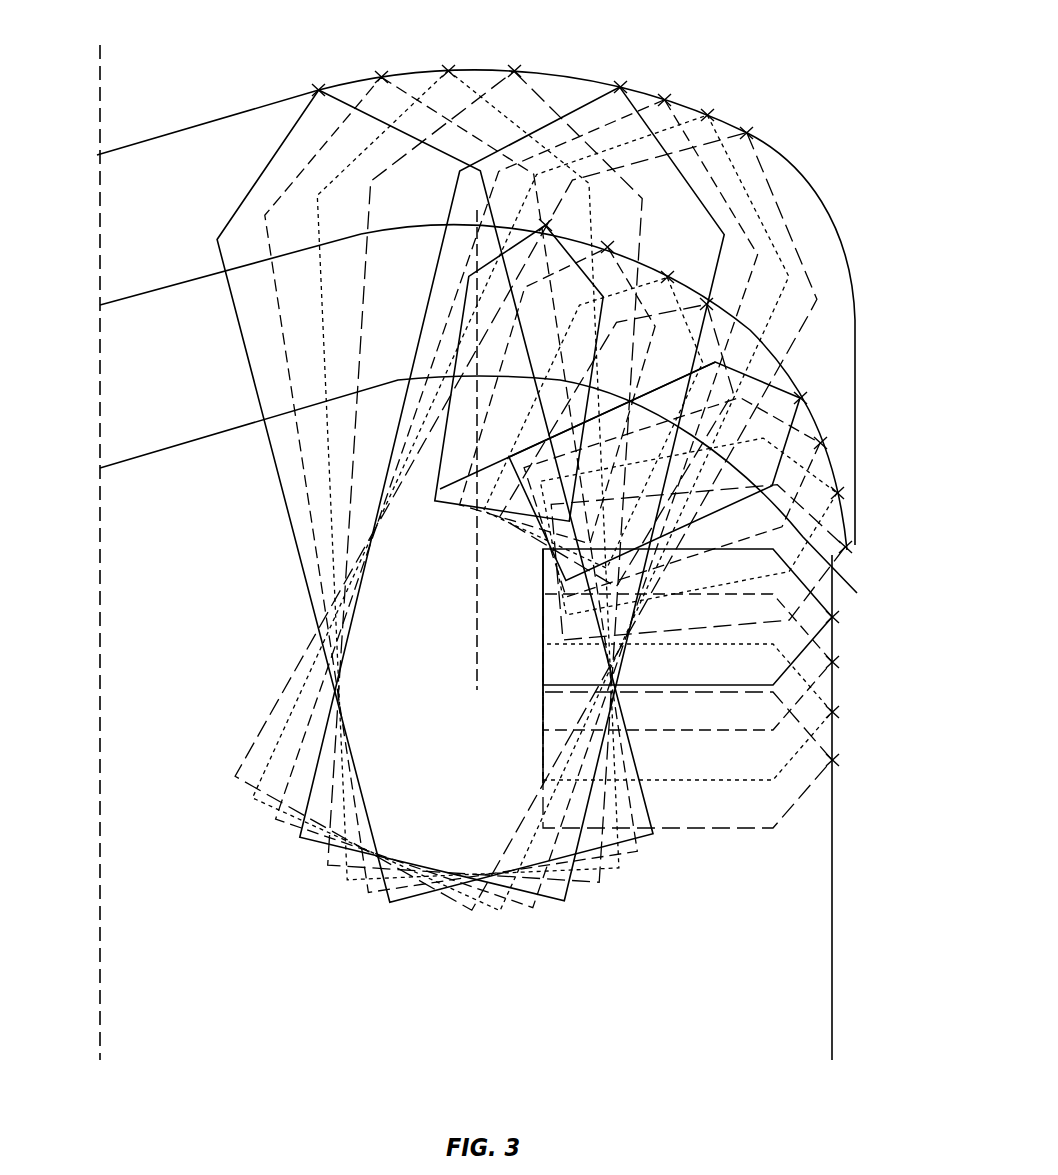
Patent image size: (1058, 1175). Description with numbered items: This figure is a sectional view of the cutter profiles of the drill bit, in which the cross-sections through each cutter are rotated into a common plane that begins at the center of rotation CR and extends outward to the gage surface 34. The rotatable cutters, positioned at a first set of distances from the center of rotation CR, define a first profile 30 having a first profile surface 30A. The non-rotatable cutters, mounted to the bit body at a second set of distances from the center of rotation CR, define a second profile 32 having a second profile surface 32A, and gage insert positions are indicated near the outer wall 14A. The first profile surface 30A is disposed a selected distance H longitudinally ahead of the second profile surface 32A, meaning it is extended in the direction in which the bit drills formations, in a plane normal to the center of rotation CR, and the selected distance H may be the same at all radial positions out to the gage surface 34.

The first profile 30 is at (290, 46).
The first profile surface 30A is at (212, 124).
The second profile 32 is at (688, 238).
The second profile surface 32A is at (192, 282).
The casing wall 14A is at (857, 350).
The gage surface 34 is at (872, 652).
The selected distance H is at (133, 150).
The center of rotation CR is at (100, 634).